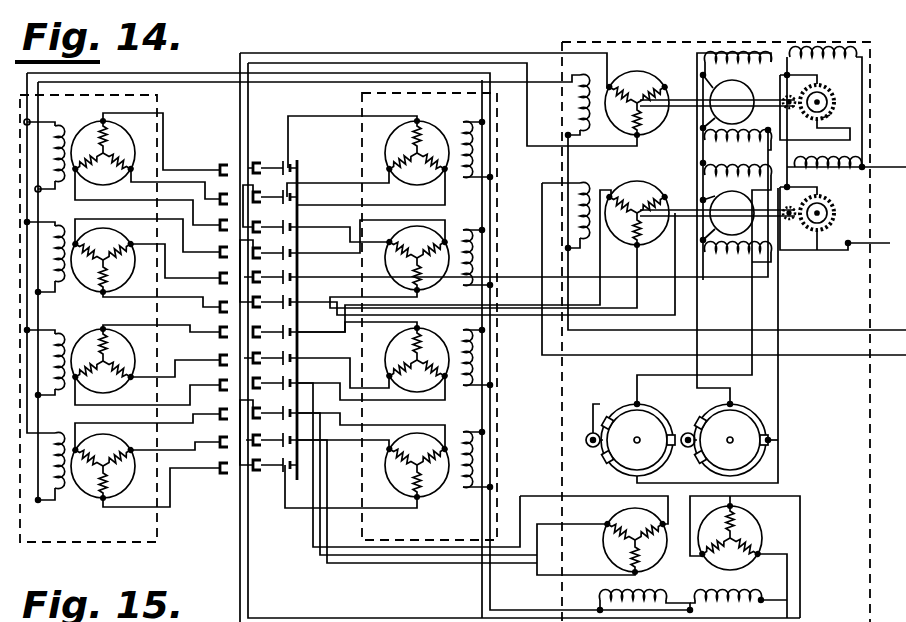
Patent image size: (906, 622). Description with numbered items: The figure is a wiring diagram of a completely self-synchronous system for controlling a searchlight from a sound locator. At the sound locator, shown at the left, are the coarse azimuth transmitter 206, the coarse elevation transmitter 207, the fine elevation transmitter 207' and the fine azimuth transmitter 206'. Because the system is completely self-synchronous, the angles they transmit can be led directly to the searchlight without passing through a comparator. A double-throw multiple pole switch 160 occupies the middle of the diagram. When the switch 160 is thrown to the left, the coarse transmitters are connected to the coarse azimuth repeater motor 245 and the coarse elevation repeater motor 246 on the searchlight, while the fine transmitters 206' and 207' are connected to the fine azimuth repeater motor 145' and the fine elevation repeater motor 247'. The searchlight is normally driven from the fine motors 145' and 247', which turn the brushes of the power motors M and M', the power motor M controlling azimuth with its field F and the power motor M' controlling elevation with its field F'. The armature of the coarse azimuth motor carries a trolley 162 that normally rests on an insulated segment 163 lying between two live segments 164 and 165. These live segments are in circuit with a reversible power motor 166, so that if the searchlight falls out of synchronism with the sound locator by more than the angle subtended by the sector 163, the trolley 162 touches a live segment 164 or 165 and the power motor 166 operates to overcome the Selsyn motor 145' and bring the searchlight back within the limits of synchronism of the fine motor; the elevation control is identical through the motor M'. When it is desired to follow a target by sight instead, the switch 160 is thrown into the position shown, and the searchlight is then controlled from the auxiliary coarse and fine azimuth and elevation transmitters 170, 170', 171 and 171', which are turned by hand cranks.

The coarse azimuth transmitter 206 is at (122, 159).
The coarse elevation transmitter 207 is at (122, 271).
The fine elevation transmitter 207' is at (122, 365).
The fine azimuth transmitter 206' is at (128, 476).
The auxiliary coarse azimuth transmitter 170 is at (389, 160).
The auxiliary fine azimuth transmitter 170' is at (467, 246).
The auxiliary coarse elevation transmitter 171 is at (394, 361).
The auxiliary fine elevation transmitter 171' is at (388, 460).
The double-throw multiple pole switch 160 is at (297, 328).
The fine azimuth repeater motor 145' is at (680, 93).
The fine elevation repeater motor 247' is at (668, 201).
The reversible power motor 166 is at (745, 97).
The power motor M is at (843, 118).
The field F is at (836, 114).
The elevation power motor M' is at (835, 220).
The field F' is at (835, 257).
The live segment 164 is at (647, 410).
The trolley 162 is at (586, 440).
The insulated segment 163 is at (605, 452).
The live segment 165 is at (718, 442).
The coarse elevation repeater motor 246 is at (600, 556).
The coarse azimuth repeater motor 245 is at (768, 518).